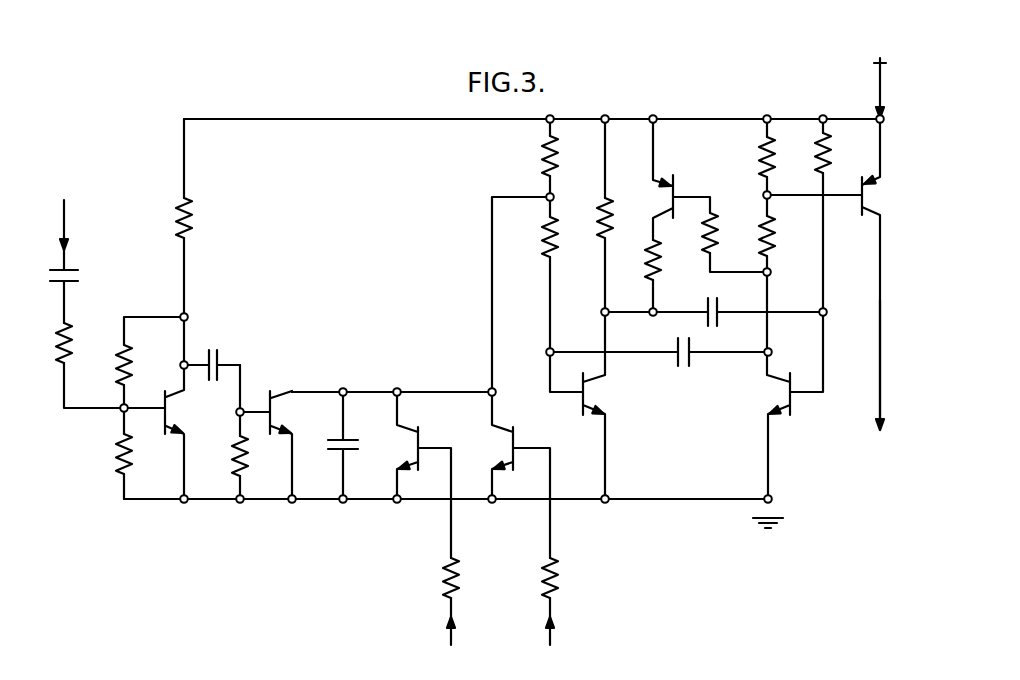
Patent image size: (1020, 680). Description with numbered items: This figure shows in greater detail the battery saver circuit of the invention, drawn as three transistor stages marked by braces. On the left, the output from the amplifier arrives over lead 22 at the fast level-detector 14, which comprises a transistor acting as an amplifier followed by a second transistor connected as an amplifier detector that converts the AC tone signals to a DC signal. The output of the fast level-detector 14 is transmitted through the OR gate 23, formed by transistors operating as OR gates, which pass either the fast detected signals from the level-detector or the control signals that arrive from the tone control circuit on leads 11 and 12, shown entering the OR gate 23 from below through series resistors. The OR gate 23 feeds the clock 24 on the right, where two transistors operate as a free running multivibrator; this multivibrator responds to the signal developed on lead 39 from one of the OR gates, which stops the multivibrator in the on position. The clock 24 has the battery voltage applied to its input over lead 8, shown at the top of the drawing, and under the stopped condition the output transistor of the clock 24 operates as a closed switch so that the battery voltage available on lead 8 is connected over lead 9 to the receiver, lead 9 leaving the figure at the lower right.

The lead 8 is at (882, 88).
The lead 9 is at (882, 360).
The lead 11 is at (567, 601).
The lead 12 is at (449, 607).
The fast level-detector 14 is at (308, 528).
The lead 22 is at (66, 222).
The OR gate 23 is at (442, 518).
The clock 24 is at (689, 308).
The lead 39 is at (490, 273).